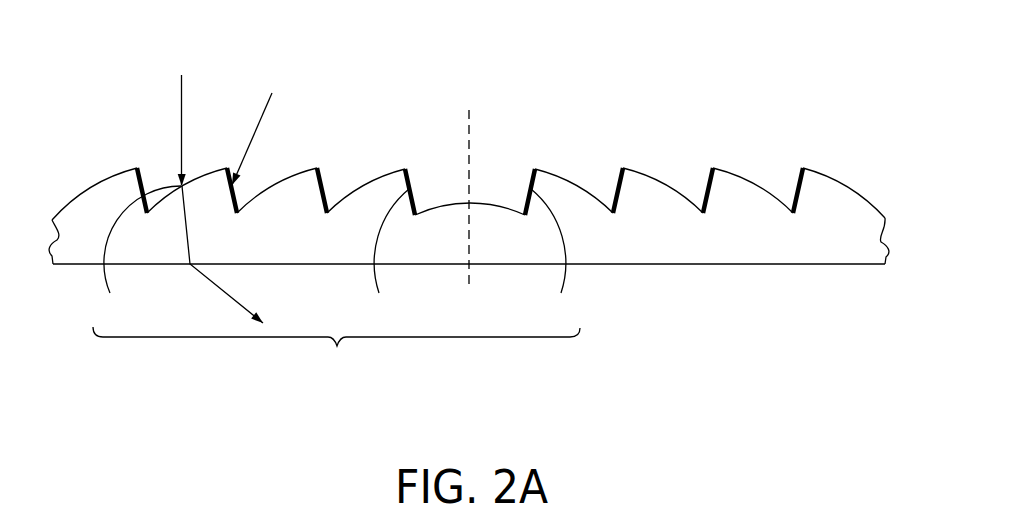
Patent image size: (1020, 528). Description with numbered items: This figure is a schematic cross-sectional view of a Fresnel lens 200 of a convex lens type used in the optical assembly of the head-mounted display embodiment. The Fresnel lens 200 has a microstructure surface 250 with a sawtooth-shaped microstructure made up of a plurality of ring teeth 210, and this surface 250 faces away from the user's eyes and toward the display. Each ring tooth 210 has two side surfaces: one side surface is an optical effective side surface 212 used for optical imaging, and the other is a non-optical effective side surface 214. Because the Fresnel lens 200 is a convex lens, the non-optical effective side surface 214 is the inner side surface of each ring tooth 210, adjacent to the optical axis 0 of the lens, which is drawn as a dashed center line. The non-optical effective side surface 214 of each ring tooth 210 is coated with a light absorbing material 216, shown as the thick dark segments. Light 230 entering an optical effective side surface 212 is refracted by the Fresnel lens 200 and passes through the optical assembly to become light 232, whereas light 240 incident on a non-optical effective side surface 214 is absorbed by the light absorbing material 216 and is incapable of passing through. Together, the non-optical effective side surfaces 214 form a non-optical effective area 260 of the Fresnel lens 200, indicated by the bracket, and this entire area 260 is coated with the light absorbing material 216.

The Fresnel lens 200 is at (469, 238).
The ring tooth 210 is at (469, 204).
The optical effective side surface 212 is at (373, 176).
The non-optical effective side surface 214 is at (336, 259).
The light absorbing material 216 is at (412, 186).
The light 230 is at (179, 91).
The light 232 is at (218, 290).
The light 240 is at (258, 112).
The microstructure surface 250 is at (491, 200).
The non-optical effective area 260 is at (336, 356).
The optical axis 0 is at (470, 181).